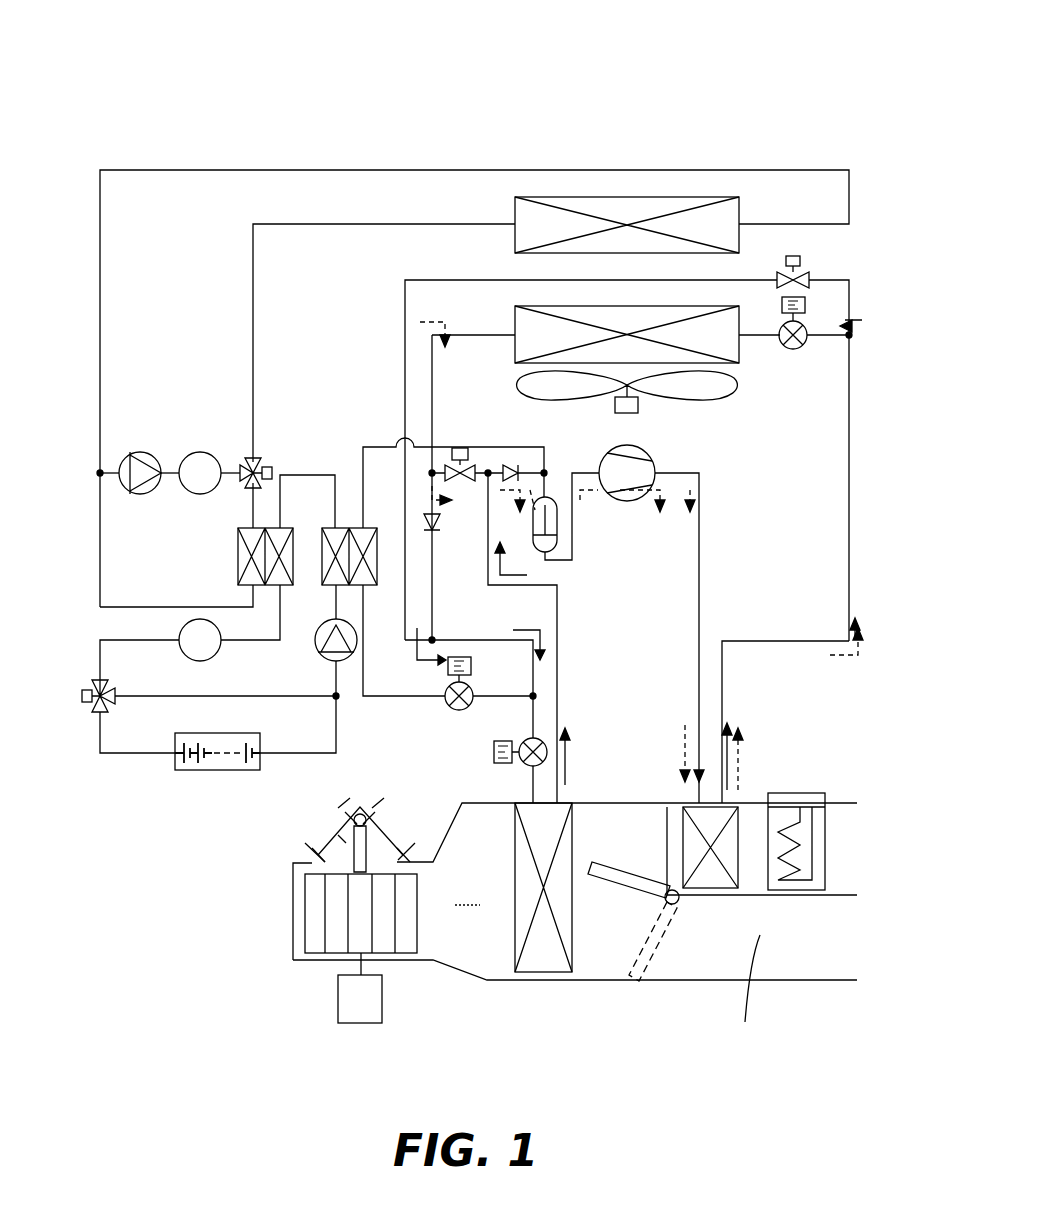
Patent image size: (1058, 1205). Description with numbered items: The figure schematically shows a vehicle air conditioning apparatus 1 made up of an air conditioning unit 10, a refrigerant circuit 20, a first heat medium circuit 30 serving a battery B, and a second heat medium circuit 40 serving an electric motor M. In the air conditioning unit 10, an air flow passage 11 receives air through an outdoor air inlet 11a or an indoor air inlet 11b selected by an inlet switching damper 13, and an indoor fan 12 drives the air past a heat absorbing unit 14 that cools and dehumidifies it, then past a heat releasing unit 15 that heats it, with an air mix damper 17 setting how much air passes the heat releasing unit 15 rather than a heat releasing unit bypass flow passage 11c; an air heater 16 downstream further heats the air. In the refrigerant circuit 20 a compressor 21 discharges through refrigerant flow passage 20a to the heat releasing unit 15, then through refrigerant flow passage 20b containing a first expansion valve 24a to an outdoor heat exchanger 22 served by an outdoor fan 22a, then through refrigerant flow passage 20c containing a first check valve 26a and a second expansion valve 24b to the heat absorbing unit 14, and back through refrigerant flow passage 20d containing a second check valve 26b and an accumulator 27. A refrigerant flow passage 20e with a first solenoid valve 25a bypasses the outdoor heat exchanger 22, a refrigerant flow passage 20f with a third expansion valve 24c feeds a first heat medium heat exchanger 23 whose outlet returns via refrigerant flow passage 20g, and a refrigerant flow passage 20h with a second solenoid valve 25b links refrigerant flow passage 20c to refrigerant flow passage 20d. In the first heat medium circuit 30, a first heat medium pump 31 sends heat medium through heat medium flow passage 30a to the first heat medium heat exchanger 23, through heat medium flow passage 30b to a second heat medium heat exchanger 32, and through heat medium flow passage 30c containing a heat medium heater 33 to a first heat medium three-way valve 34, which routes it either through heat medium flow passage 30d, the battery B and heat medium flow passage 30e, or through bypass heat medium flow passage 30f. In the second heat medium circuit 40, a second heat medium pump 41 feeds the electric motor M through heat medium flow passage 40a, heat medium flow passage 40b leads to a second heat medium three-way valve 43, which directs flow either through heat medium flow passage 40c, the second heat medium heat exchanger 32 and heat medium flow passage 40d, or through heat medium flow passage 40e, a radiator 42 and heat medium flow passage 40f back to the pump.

The vehicle air conditioning apparatus 1 is at (786, 82).
The air conditioning unit 10 is at (858, 773).
The air flow passage 11 is at (575, 891).
The outdoor air inlet 11a is at (318, 822).
The indoor air inlet 11b is at (412, 826).
The heat releasing unit bypass flow passage 11c is at (744, 991).
The indoor fan 12 is at (305, 940).
The inlet switching damper 13 is at (368, 810).
The heat absorbing unit 14 is at (575, 803).
The heat releasing unit 15 is at (675, 806).
The air heater 16 is at (802, 800).
The air mix damper 17 is at (632, 864).
The refrigerant circuit 20 is at (856, 266).
The refrigerant flow passage 20a is at (699, 643).
The refrigerant flow passage 20b is at (790, 645).
The refrigerant flow passage 20c is at (460, 638).
The refrigerant flow passage 20d is at (557, 696).
The refrigerant flow passage 20e is at (405, 292).
The refrigerant flow passage 20f is at (363, 690).
The refrigerant flow passage 20g is at (370, 447).
The refrigerant flow passage 20h is at (434, 462).
The compressor 21 is at (650, 455).
The outdoor heat exchanger 22 is at (742, 352).
The outdoor fan 22a is at (726, 392).
The first heat medium heat exchanger 23 is at (368, 528).
The first expansion valve 24a is at (805, 327).
The second expansion valve 24b is at (520, 745).
The third expansion valve 24c is at (470, 688).
The first solenoid valve 25a is at (800, 272).
The second solenoid valve 25b is at (470, 450).
The first check valve 26a is at (436, 533).
The second check valve 26b is at (516, 464).
The accumulator 27 is at (548, 495).
The first heat medium circuit 30 is at (104, 792).
The heat medium flow passage 30a is at (336, 602).
The heat medium flow passage 30b is at (308, 475).
The heat medium flow passage 30c is at (100, 645).
The heat medium flow passage 30d is at (140, 755).
The heat medium flow passage 30e is at (336, 724).
The heat medium flow passage 30f is at (160, 698).
The first heat medium pump 31 is at (319, 652).
The second heat medium heat exchanger 32 is at (285, 528).
The heat medium heater 33 is at (186, 655).
The first heat medium three-way valve 34 is at (90, 703).
The second heat medium circuit 40 is at (276, 152).
The heat medium flow passage 40a is at (170, 472).
The heat medium flow passage 40b is at (231, 472).
The heat medium flow passage 40c is at (253, 511).
The heat medium flow passage 40d is at (168, 607).
The heat medium flow passage 40e is at (253, 290).
The heat medium flow passage 40f is at (100, 250).
The second heat medium pump 41 is at (140, 452).
The radiator 42 is at (515, 235).
The second heat medium three-way valve 43 is at (257, 460).
The electric motor M is at (200, 451).
The battery B is at (217, 772).